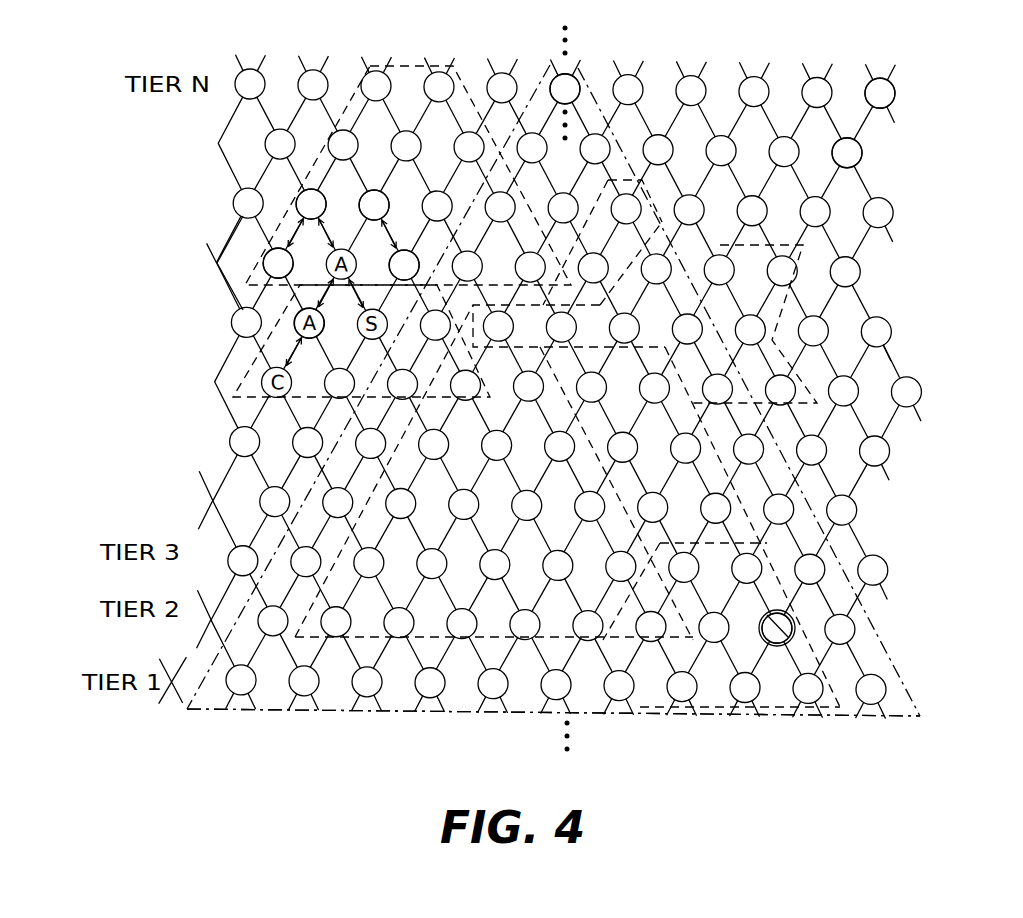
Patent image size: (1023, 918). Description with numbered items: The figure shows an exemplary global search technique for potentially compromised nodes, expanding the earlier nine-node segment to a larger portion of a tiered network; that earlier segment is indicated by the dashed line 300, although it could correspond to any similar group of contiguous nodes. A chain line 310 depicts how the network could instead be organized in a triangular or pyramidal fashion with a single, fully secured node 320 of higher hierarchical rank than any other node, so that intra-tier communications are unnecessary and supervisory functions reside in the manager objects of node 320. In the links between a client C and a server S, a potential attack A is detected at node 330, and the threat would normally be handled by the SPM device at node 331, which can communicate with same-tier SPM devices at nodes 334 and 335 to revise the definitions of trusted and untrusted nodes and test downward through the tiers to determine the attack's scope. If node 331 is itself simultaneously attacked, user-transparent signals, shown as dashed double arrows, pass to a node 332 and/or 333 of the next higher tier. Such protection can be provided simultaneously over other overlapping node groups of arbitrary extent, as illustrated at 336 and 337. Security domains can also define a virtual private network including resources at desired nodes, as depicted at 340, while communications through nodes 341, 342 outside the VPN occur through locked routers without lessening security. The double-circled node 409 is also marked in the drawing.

The dashed line indicating network segment 300 is at (812, 720).
The chain line indicating pyramidal organization 310 is at (700, 717).
The highest-rank node 320 is at (565, 87).
The node where potential attack is detected 330 is at (300, 307).
The SPM device node 331 is at (297, 246).
The next higher tier node 332 is at (307, 206).
The next higher tier node 333 is at (376, 197).
The same-tier SPM device node 334 is at (408, 255).
The same-tier SPM device node 335 is at (220, 265).
The overlapping protected node group 336 is at (248, 372).
The overlapping protected node group 337 is at (263, 254).
The virtual private network resources 340 is at (855, 246).
The node outside VPN 341 is at (888, 89).
The node outside VPN 342 is at (853, 152).
The selected node 409 is at (785, 615).